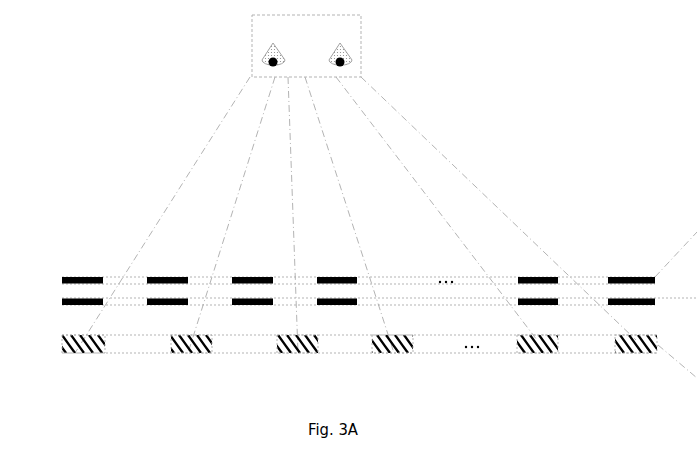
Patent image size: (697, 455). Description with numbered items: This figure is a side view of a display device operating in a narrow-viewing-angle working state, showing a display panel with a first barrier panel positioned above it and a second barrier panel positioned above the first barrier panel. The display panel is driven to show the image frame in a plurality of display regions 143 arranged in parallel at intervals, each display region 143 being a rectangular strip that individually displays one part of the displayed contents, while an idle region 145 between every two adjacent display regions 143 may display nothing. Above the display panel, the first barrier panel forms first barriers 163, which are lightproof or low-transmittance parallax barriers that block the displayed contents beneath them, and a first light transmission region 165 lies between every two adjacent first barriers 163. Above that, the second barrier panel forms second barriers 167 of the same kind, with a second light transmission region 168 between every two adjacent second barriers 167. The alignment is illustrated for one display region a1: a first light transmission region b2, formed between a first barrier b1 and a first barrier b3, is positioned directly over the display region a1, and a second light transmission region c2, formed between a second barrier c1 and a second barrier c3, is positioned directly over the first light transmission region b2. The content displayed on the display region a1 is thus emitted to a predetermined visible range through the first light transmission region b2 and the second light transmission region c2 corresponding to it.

The display region 143 is at (78, 356).
The idle region 145 is at (138, 356).
The first barrier 163 is at (536, 307).
The first light transmission region 165 is at (131, 306).
The second barrier 167 is at (326, 276).
The second light transmission region 168 is at (581, 276).
The display region a1 is at (196, 355).
The first barrier b1 is at (174, 306).
The first light transmission region b2 is at (213, 306).
The first barrier b3 is at (256, 306).
The second barrier c1 is at (165, 276).
The second light transmission region c2 is at (198, 277).
The second barrier c3 is at (249, 276).